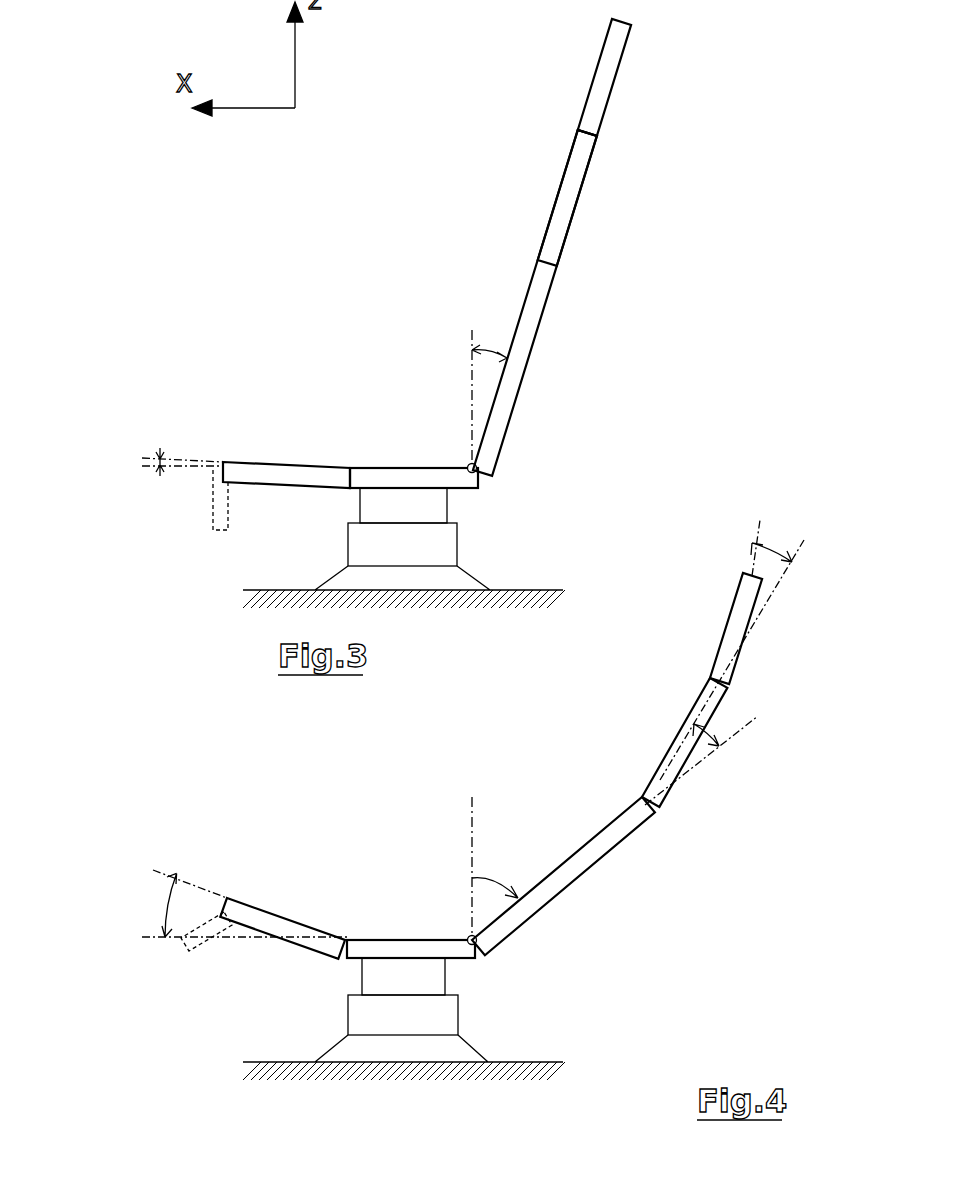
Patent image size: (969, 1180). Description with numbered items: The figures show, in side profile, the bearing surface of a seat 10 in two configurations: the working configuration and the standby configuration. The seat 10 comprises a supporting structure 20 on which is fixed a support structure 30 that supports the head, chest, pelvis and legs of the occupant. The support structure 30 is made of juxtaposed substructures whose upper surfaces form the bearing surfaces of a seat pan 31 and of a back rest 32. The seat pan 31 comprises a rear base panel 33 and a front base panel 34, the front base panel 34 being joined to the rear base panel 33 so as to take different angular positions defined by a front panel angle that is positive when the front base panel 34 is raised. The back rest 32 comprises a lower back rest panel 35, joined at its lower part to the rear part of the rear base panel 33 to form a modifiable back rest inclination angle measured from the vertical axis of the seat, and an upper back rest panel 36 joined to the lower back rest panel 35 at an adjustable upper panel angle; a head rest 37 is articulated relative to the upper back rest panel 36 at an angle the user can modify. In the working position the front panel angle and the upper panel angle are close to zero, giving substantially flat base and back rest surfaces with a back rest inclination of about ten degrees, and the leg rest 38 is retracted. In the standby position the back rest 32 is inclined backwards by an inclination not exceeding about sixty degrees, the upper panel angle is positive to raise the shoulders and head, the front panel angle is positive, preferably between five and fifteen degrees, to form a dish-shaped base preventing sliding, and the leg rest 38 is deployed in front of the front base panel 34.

In FIG. 3, the seat 10 is at (736, 294).
In FIG. 4, the seat 10 is at (691, 887).
In FIG. 3, the supporting structure 20 is at (437, 550).
In FIG. 4, the supporting structure 20 is at (443, 1013).
In FIG. 3, the support structure 30 is at (581, 443).
In FIG. 3, the seat pan 31 is at (440, 393).
In FIG. 3, the back rest 32 is at (577, 33).
In FIG. 3, the rear base panel 33 is at (386, 478).
In FIG. 4, the rear base panel 33 is at (386, 950).
In FIG. 3, the front base panel 34 is at (285, 470).
In FIG. 4, the front base panel 34 is at (273, 917).
In FIG. 3, the lower back rest panel 35 is at (530, 323).
In FIG. 4, the lower back rest panel 35 is at (587, 858).
In FIG. 3, the upper back rest panel 36 is at (570, 196).
In FIG. 4, the upper back rest panel 36 is at (676, 748).
In FIG. 3, the head rest 37 is at (604, 80).
In FIG. 4, the head rest 37 is at (733, 628).
In FIG. 3, the leg rest 38 is at (218, 512).
In FIG. 4, the leg rest 38 is at (197, 948).